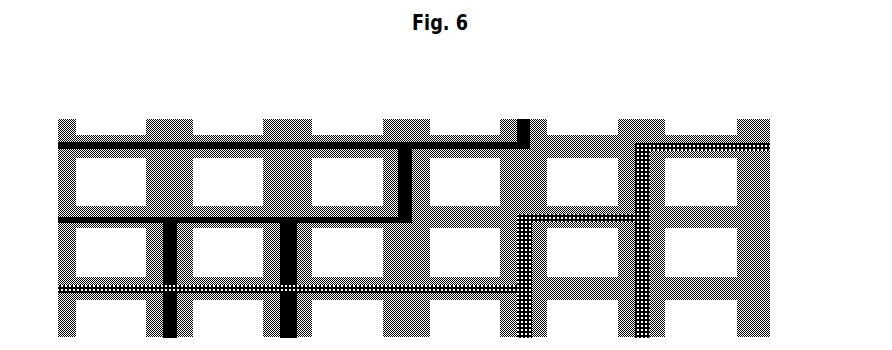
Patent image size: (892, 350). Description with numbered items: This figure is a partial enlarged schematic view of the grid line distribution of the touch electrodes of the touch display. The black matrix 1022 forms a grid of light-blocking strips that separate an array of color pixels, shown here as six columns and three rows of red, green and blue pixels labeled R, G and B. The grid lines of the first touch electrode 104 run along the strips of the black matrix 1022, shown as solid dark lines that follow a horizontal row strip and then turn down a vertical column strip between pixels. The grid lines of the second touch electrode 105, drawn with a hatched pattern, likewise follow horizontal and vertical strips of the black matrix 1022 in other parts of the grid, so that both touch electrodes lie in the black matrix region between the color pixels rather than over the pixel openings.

The first touch electrode 104 is at (393, 143).
The second touch electrode 105 is at (652, 143).
The black matrix 1022 is at (752, 225).